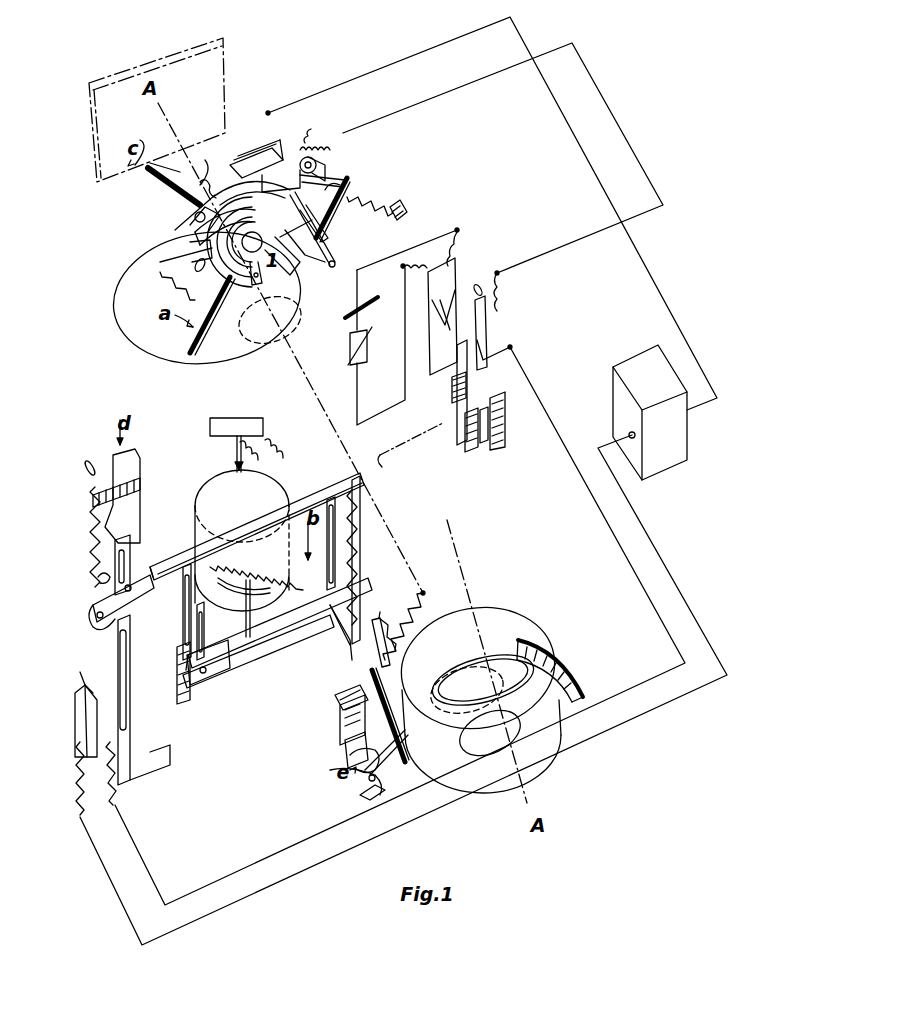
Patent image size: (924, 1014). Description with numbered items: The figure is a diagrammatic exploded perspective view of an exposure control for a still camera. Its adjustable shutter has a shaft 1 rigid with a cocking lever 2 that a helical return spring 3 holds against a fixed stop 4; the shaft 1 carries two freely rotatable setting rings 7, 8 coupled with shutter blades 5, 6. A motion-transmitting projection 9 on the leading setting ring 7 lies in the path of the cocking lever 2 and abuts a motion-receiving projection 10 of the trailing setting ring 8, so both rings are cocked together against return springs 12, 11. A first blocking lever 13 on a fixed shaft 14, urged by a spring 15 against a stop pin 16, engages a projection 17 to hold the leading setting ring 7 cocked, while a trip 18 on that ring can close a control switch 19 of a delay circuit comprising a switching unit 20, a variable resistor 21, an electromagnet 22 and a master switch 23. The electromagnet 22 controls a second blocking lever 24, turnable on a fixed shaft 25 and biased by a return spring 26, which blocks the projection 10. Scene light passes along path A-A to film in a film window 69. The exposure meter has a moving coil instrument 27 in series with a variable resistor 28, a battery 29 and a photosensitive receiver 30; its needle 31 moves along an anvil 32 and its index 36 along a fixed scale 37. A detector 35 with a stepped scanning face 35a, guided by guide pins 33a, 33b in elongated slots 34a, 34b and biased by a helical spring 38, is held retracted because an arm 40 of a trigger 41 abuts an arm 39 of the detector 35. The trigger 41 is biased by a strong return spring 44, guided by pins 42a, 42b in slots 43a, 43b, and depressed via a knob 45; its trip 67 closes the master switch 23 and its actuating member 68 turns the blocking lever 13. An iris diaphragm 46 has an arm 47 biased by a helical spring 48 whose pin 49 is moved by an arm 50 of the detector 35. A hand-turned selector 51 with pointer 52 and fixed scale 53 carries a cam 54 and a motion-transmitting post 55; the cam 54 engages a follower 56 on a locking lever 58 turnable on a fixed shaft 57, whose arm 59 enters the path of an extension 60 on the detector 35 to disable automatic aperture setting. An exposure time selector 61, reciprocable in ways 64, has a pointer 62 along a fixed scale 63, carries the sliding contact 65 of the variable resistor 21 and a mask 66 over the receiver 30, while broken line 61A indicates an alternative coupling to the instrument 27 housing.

The shaft 1 is at (234, 242).
The cocking lever 2 is at (316, 262).
The helical return spring 3 is at (283, 162).
The fixed stop 4 is at (292, 205).
The shutter blade 5 is at (233, 350).
The shutter blade 6 is at (140, 335).
The leading setting ring 7 is at (200, 240).
The trailing setting ring 8 is at (190, 250).
The motion-transmitting projection 9 is at (295, 268).
The motion-receiving projection 10 is at (285, 285).
The helical return spring 11 is at (218, 305).
The helical return spring 12 is at (178, 272).
The first blocking lever 13 is at (135, 200).
The fixed shaft 14 is at (178, 211).
The spring 15 is at (200, 182).
The stationary stop pin 16 is at (205, 160).
The projection 17 is at (298, 245).
The trip 18 is at (268, 150).
The control switch 19 is at (240, 152).
The switching unit 20 is at (685, 442).
The variable resistor 21 is at (500, 298).
The electromagnet 22 is at (333, 165).
The master switch 23 is at (74, 740).
The second blocking lever 24 is at (335, 215).
The fixed shaft 25 is at (318, 240).
The helical return spring 26 is at (380, 205).
The moving coil instrument 27 is at (215, 490).
The variable resistor 28 is at (348, 347).
The battery 29 is at (365, 302).
The photosensitive receiver 30 is at (445, 280).
The needle 31 is at (246, 645).
The anvil 32 is at (210, 672).
The guide pin 33a is at (203, 680).
The guide pin 33b is at (362, 560).
The elongated slot 34a is at (186, 640).
The elongated slot 34b is at (358, 498).
The detector 35 is at (290, 495).
The stepped scanning face 35a is at (238, 565).
The index 36 is at (237, 452).
The fixed scale 37 is at (228, 420).
The helical spring 38 is at (358, 590).
The arm 39 is at (160, 565).
The arm 40 is at (145, 598).
The trigger 41 is at (98, 628).
The guide pin 42a is at (132, 715).
The guide pin 42b is at (112, 568).
The elongated slot 43a is at (125, 672).
The elongated slot 43b is at (92, 527).
The helical return spring 44 is at (90, 495).
The knob 45 is at (135, 490).
The iris diaphragm 46 is at (495, 640).
The arm 47 is at (335, 698).
The helical spring 48 is at (430, 600).
The pin 49 is at (378, 655).
The arm 50 is at (330, 642).
The selector 51 is at (550, 750).
The pointer 52 is at (576, 708).
The fixed scale 53 is at (561, 661).
The cam 54 is at (395, 668).
The motion-transmitting post 55 is at (350, 755).
The follower 56 is at (363, 797).
The fixed shaft 57 is at (372, 780).
The locking lever 58 is at (337, 767).
The arm 59 is at (345, 742).
The extension 60 is at (340, 722).
The selector 61 is at (455, 445).
The broken line 61A is at (410, 459).
The pointer 62 is at (480, 435).
The fixed scale 63 is at (502, 440).
The ways 64 is at (442, 396).
The sliding contact 65 is at (480, 330).
The mask 66 is at (428, 345).
The trip 67 is at (85, 602).
The actuating member 68 is at (158, 770).
The film window 69 is at (178, 64).